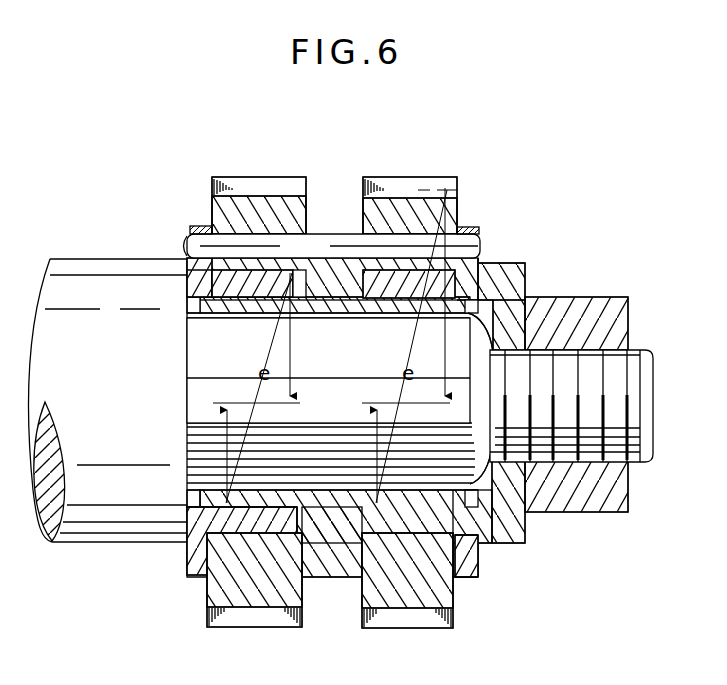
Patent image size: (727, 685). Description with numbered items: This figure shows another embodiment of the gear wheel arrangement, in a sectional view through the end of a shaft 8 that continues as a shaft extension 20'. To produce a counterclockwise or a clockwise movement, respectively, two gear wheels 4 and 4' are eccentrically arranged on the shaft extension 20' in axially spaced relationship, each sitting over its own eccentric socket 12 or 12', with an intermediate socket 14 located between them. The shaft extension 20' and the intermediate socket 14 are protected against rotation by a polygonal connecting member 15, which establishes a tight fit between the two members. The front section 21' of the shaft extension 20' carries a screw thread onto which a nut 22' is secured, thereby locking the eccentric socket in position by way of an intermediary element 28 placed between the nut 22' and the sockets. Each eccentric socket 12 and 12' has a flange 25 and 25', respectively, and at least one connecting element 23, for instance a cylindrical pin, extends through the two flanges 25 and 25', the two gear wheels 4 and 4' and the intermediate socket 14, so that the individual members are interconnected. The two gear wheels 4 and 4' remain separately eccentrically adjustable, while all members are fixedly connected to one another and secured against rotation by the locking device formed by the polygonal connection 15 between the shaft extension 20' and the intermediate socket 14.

The shaft 8 is at (62, 288).
The intermediate socket 14 is at (332, 558).
The shaft extension 20' is at (307, 398).
The eccentric socket 12 is at (211, 421).
The eccentric socket 12' is at (457, 432).
The gear wheel 4 is at (233, 403).
The gear wheel 4' is at (429, 403).
The connecting element 23 is at (470, 248).
The flange 25 is at (181, 205).
The flange 25' is at (484, 203).
The intermediary element 28 is at (512, 287).
The polygonal connecting member 15 is at (492, 480).
The nut 22' is at (604, 390).
The front section 21' is at (597, 401).